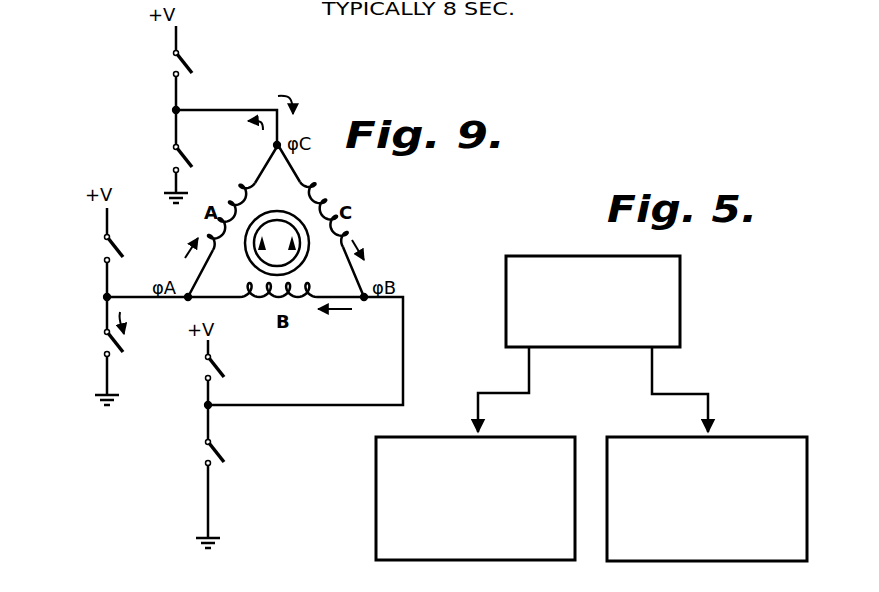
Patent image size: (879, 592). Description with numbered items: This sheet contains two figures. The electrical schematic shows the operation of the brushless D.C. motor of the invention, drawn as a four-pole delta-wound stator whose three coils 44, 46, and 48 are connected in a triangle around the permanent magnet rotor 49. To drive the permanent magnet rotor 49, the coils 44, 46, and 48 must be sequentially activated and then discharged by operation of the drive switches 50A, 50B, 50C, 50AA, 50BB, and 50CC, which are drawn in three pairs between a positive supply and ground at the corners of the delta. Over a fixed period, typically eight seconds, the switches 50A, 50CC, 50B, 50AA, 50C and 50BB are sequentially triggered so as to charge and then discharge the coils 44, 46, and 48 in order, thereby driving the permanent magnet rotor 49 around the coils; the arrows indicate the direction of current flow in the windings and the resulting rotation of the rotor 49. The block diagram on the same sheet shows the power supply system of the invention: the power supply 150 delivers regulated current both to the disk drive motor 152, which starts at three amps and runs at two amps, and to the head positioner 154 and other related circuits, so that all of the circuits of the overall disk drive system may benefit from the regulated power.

In FIG. 9, the coil 44 is at (240, 200).
In FIG. 9, the coil 46 is at (257, 300).
In FIG. 9, the coil 48 is at (316, 188).
In FIG. 9, the permanent magnet rotor 49 is at (287, 212).
In FIG. 9, the drive switch 50A is at (87, 235).
In FIG. 9, the drive switch 50AA is at (84, 342).
In FIG. 9, the drive switch 50B is at (186, 360).
In FIG. 9, the drive switch 50BB is at (182, 453).
In FIG. 9, the drive switch 50C is at (152, 53).
In FIG. 9, the drive switch 50CC is at (151, 159).
In FIG. 5, the power supply 150 is at (682, 267).
In FIG. 5, the disk drive motor 152 is at (553, 447).
In FIG. 5, the head positioner 154 is at (745, 440).